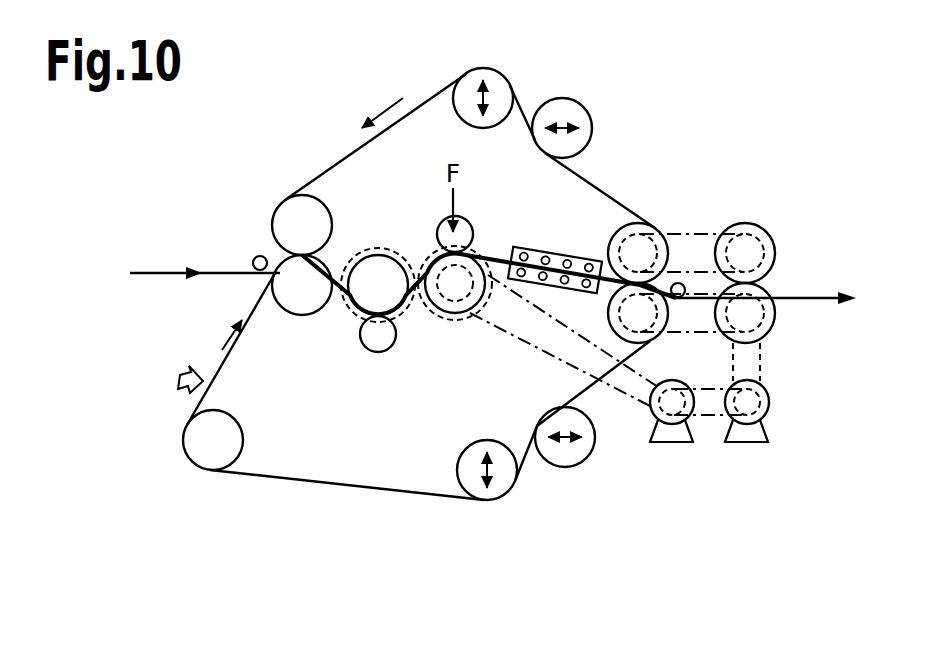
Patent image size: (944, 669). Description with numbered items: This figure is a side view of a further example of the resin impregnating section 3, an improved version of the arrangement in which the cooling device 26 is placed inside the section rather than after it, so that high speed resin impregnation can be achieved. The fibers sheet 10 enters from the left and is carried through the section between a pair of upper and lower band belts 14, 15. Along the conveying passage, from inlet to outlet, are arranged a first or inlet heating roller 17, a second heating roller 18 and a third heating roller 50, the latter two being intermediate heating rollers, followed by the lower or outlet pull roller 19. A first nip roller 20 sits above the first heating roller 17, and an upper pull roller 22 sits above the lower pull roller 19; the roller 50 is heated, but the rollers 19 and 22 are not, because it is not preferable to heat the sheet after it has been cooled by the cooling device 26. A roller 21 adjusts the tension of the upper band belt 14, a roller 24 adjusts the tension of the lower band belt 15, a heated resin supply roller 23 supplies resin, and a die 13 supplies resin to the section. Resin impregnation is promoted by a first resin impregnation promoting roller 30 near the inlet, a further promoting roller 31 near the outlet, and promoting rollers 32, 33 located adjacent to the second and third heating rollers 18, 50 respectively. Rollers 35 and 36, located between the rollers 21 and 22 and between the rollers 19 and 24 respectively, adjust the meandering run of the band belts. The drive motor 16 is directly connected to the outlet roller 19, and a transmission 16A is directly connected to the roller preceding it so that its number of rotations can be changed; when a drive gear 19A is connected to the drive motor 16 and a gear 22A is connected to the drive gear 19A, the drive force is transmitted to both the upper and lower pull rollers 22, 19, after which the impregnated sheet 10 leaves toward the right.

The resin impregnating section 3 is at (337, 70).
The web 10 is at (165, 272).
The die 13 is at (180, 372).
The upper band belt 14 is at (418, 104).
The lower band belt 15 is at (343, 485).
The drive motor 16 is at (748, 443).
The transmission 16A is at (672, 443).
The first heating roller 17 is at (303, 313).
The second heating roller 18 is at (378, 265).
The lower pull roller 19 is at (650, 338).
The drive gear 19A is at (766, 334).
The first nip roller 20 is at (280, 208).
The upper band belt tension adjusting roller 21 is at (504, 78).
The upper pull roller 22 is at (647, 226).
The gear 22A is at (761, 228).
The heated resin supply roller 23 is at (200, 466).
The lower band belt tension adjusting roller 24 is at (488, 500).
The cooling device 26 is at (556, 253).
The first resin impregnation promoting roller 30 is at (254, 257).
The resin impregnation promoting roller 31 is at (680, 283).
The resin impregnation promoting roller 32 is at (378, 352).
The resin impregnation promoting roller 33 is at (469, 221).
The meandering adjusting roller 35 is at (584, 108).
The meandering adjusting roller 36 is at (566, 467).
The third heating roller 50 is at (460, 302).